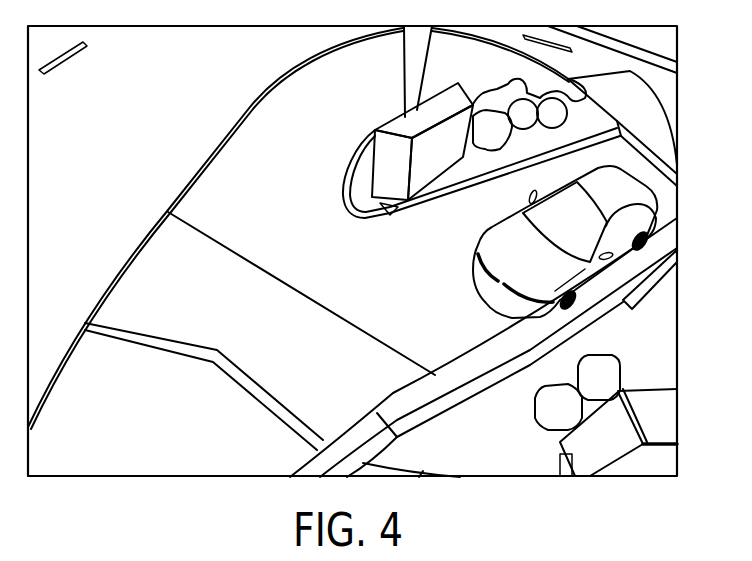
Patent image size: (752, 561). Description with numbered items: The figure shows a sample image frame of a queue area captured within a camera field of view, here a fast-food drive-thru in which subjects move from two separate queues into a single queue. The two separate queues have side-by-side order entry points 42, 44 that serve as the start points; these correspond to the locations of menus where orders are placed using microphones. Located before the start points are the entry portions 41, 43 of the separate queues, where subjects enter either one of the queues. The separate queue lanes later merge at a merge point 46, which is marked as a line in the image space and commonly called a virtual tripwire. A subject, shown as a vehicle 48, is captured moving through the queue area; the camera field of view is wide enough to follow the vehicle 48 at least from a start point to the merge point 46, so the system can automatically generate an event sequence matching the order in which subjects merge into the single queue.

The entry portion 41 is at (481, 81).
The order entry point 42 is at (401, 117).
The entry portion 43 is at (651, 141).
The order entry point 44 is at (634, 288).
The merge point 46 is at (255, 383).
The vehicle 48 is at (544, 276).